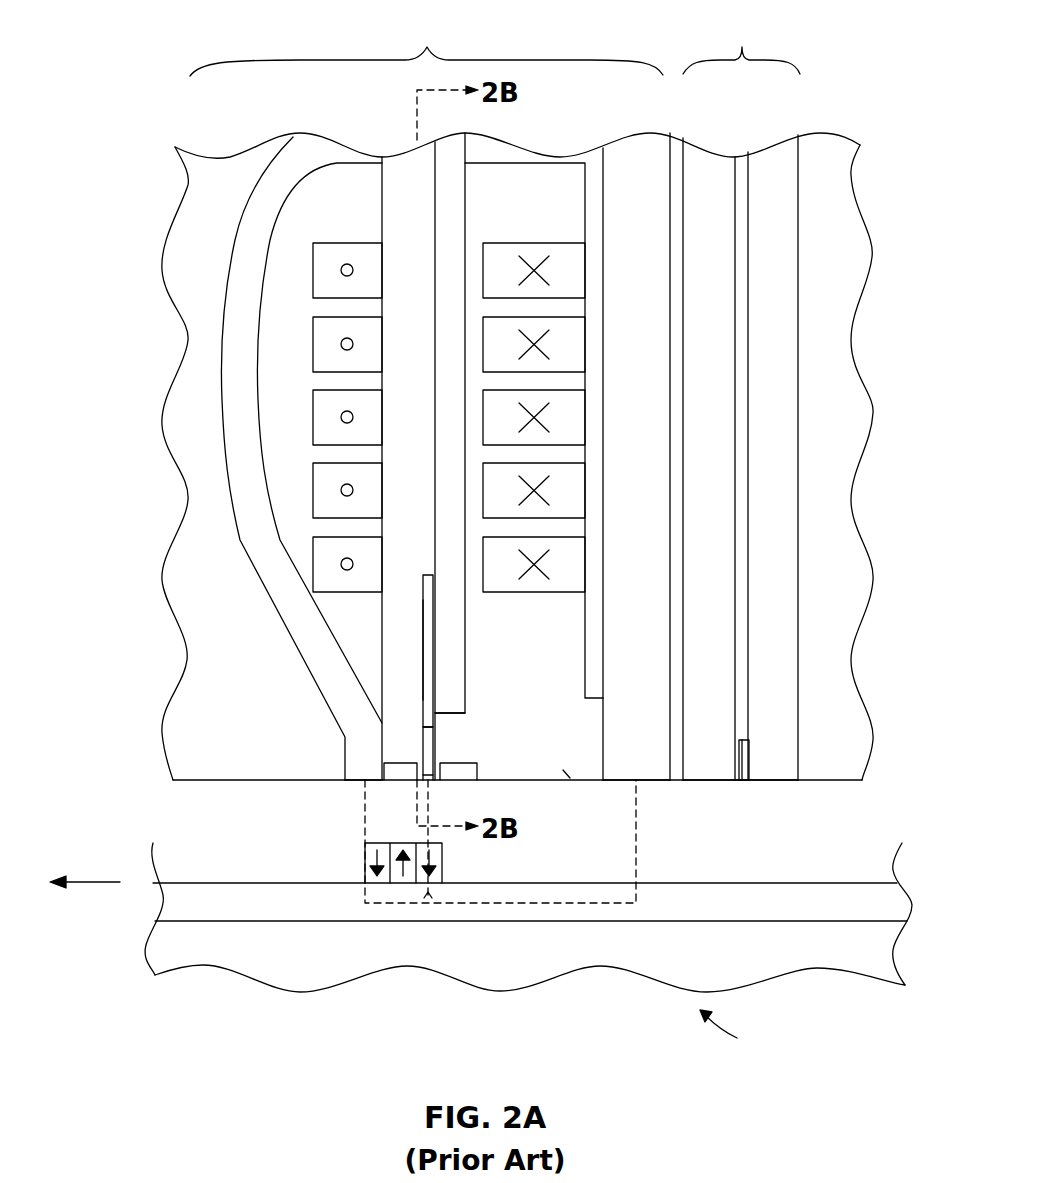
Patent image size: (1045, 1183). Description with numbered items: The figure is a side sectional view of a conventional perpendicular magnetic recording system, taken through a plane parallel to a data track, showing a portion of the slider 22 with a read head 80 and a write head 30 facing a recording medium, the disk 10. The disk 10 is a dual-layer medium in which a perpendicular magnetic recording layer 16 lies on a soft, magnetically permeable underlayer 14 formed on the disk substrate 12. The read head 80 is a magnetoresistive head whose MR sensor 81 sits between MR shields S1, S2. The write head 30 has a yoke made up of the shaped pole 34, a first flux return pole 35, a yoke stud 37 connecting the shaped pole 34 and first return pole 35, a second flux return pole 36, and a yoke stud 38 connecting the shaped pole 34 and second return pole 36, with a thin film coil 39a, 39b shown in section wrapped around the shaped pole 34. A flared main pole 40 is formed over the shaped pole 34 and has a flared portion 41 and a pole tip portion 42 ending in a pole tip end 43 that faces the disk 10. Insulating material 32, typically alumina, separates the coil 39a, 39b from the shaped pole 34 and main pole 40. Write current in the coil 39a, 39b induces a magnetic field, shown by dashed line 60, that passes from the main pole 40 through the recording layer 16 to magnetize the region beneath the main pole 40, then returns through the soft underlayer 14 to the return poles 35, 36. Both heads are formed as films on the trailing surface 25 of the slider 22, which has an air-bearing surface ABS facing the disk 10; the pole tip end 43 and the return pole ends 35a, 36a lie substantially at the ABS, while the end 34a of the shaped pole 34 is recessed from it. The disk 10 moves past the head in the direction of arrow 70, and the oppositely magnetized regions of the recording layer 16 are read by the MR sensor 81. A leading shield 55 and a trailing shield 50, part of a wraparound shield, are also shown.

The write head 30 is at (426, 46).
The read head 80 is at (741, 45).
The slider 22 is at (866, 230).
The yoke stud 38 is at (405, 172).
The yoke stud 37 is at (620, 145).
The trailing surface 25 is at (799, 162).
The thin film coil 39b is at (352, 243).
The thin film coil 39a is at (556, 243).
The shaped pole 34 is at (452, 348).
The flared main pole 40 is at (430, 575).
The flared portion 41 is at (421, 648).
The second flux return pole 36 is at (320, 688).
The end of second return pole 36a is at (360, 785).
The trailing shield 50 is at (398, 762).
The pole tip portion 42 is at (434, 730).
The pole tip end 43 is at (434, 782).
The end of shaped pole 34a is at (468, 715).
The first flux return pole 35 is at (612, 748).
The end of first return pole 35a is at (647, 782).
The leading shield 55 is at (478, 768).
The insulating material 32 is at (563, 770).
The MR shield S1 is at (792, 686).
The MR shield S2 is at (720, 773).
The MR sensor 81 is at (750, 750).
The air-bearing surface ABS is at (817, 782).
The recording layer 16 is at (232, 858).
The soft underlayer 14 is at (165, 900).
The disk substrate 12 is at (165, 948).
The magnetic field 60 is at (400, 905).
The arrow 70 is at (100, 890).
The disk 10 is at (736, 1030).